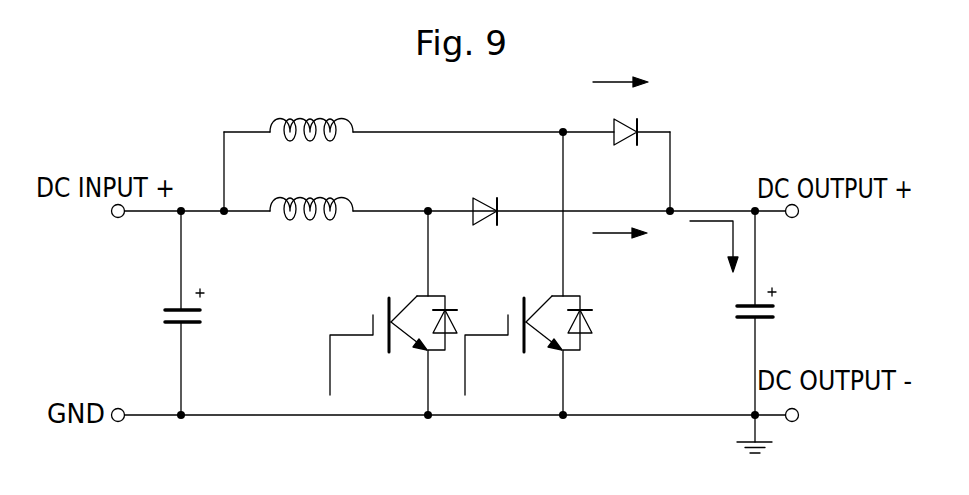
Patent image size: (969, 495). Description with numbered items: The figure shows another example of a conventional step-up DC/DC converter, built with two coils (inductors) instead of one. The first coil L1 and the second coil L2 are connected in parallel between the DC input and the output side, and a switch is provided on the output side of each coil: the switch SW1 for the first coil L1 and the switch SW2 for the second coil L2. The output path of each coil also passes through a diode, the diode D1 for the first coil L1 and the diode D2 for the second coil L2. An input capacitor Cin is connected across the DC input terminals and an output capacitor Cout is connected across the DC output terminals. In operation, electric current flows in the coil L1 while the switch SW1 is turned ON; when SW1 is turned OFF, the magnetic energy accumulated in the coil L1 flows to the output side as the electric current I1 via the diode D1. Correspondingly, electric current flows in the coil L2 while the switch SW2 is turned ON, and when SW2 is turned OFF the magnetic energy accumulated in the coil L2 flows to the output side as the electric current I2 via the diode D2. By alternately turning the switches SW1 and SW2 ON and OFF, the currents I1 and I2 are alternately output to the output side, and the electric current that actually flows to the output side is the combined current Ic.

The first coil L1 is at (311, 111).
The second coil L2 is at (311, 229).
The diode D1 is at (614, 119).
The diode D2 is at (487, 197).
The switch SW1 is at (528, 273).
The switch SW2 is at (393, 313).
The input capacitor Cin is at (158, 313).
The output capacitor Cout is at (720, 313).
The electric current from the first coil I1 is at (620, 69).
The electric current from the second coil I2 is at (620, 247).
The output electric current Ic is at (714, 246).